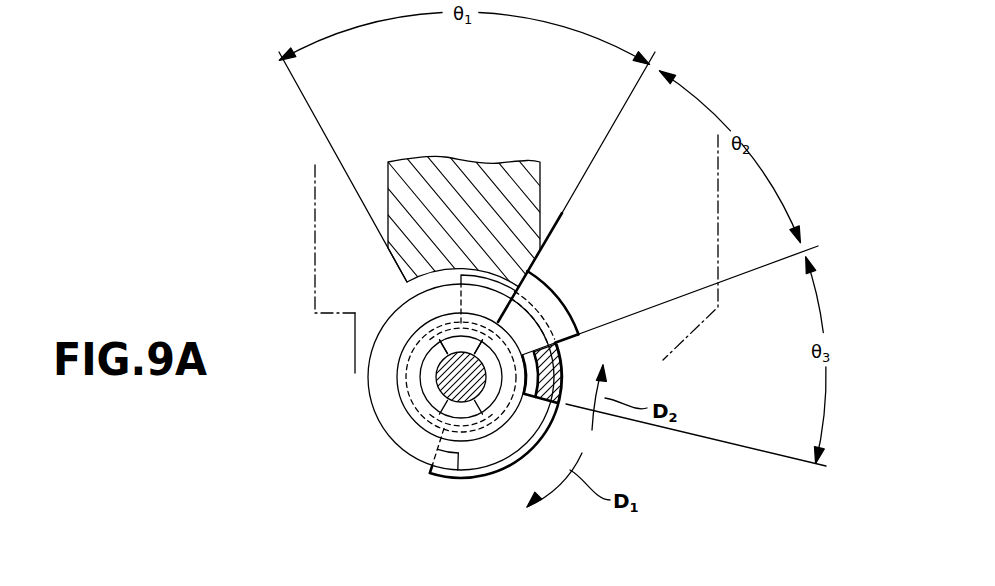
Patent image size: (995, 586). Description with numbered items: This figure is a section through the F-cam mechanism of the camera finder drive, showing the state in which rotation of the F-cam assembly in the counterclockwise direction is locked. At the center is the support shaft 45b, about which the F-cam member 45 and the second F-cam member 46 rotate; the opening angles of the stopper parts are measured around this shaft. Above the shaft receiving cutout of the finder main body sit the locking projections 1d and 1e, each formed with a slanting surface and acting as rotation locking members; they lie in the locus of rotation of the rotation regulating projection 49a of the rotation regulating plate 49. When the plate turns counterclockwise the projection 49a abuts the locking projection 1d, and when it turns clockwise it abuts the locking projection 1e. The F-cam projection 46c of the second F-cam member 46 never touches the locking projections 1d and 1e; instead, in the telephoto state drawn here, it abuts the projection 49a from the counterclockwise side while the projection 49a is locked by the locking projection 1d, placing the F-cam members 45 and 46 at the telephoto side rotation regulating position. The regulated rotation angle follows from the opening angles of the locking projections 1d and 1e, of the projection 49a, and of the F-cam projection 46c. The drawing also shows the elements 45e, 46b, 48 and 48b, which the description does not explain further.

The locking projection 1d is at (548, 266).
The locking projection 1e is at (393, 258).
The F-cam member 45 is at (461, 377).
The support shaft 45b is at (445, 373).
The shaft key 45e is at (427, 413).
The second F-cam member 46 is at (480, 478).
The hidden cam portion 46b is at (428, 440).
The F-cam projection 46c is at (563, 372).
The stop lug 48 is at (443, 477).
The notch 48b is at (547, 435).
The rotation regulating plate 49 is at (507, 413).
The rotation regulating projection 49a is at (574, 306).